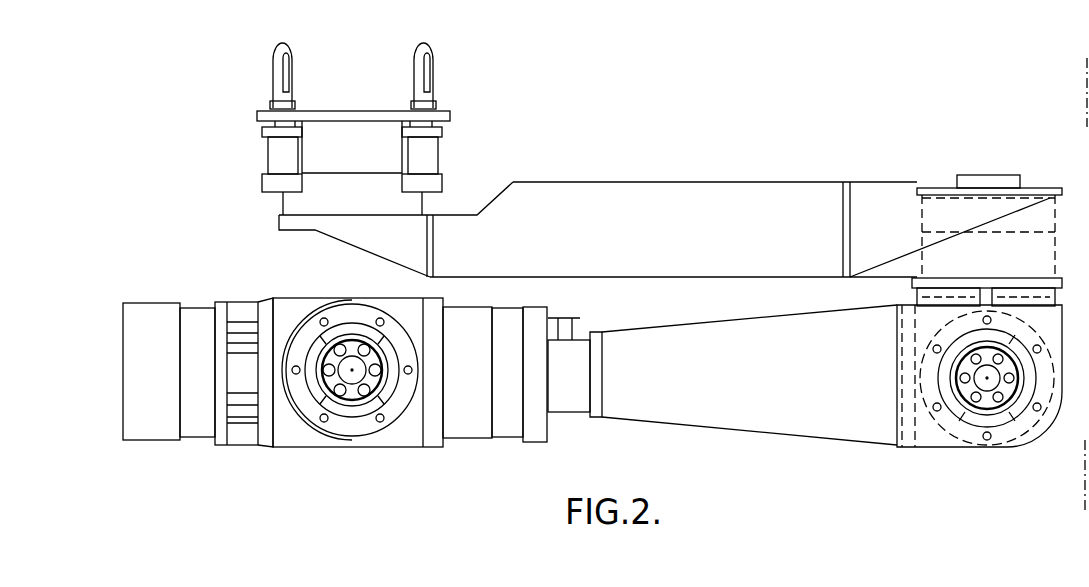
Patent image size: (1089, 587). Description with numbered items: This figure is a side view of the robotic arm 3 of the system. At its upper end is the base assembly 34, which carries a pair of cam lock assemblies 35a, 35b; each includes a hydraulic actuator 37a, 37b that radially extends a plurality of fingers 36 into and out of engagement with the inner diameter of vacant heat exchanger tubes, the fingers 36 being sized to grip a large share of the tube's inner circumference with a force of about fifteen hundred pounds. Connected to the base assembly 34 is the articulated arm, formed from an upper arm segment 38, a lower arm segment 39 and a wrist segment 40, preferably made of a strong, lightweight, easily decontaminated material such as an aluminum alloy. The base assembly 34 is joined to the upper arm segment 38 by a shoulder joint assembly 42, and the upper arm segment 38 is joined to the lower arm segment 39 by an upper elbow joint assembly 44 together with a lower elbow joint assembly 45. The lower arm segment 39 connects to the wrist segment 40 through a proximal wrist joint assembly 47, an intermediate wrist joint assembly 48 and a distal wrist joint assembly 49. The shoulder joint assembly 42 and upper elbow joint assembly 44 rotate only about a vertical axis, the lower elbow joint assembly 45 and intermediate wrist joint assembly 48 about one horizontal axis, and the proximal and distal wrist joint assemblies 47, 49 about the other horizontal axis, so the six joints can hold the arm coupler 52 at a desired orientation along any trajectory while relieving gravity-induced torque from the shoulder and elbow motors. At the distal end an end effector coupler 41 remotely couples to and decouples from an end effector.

The robotic arm 3 is at (1087, 58).
The base assembly 34 is at (367, 161).
The cam lock assembly 35a is at (263, 166).
The cam lock assembly 35b is at (440, 163).
The fingers 36 is at (414, 62).
The hydraulic actuator 37a is at (268, 153).
The hydraulic actuator 37b is at (438, 152).
The upper arm segment 38 is at (679, 241).
The lower arm segment 39 is at (779, 386).
The wrist segment 40 is at (201, 418).
The end effector coupler 41 is at (153, 420).
The shoulder joint assembly 42 is at (340, 202).
The upper elbow joint assembly 44 is at (998, 263).
The lower elbow joint assembly 45 is at (965, 372).
The proximal wrist joint assembly 47 is at (468, 427).
The intermediate wrist joint assembly 48 is at (352, 378).
The distal wrist joint assembly 49 is at (242, 433).
The arm coupler 52 is at (568, 388).